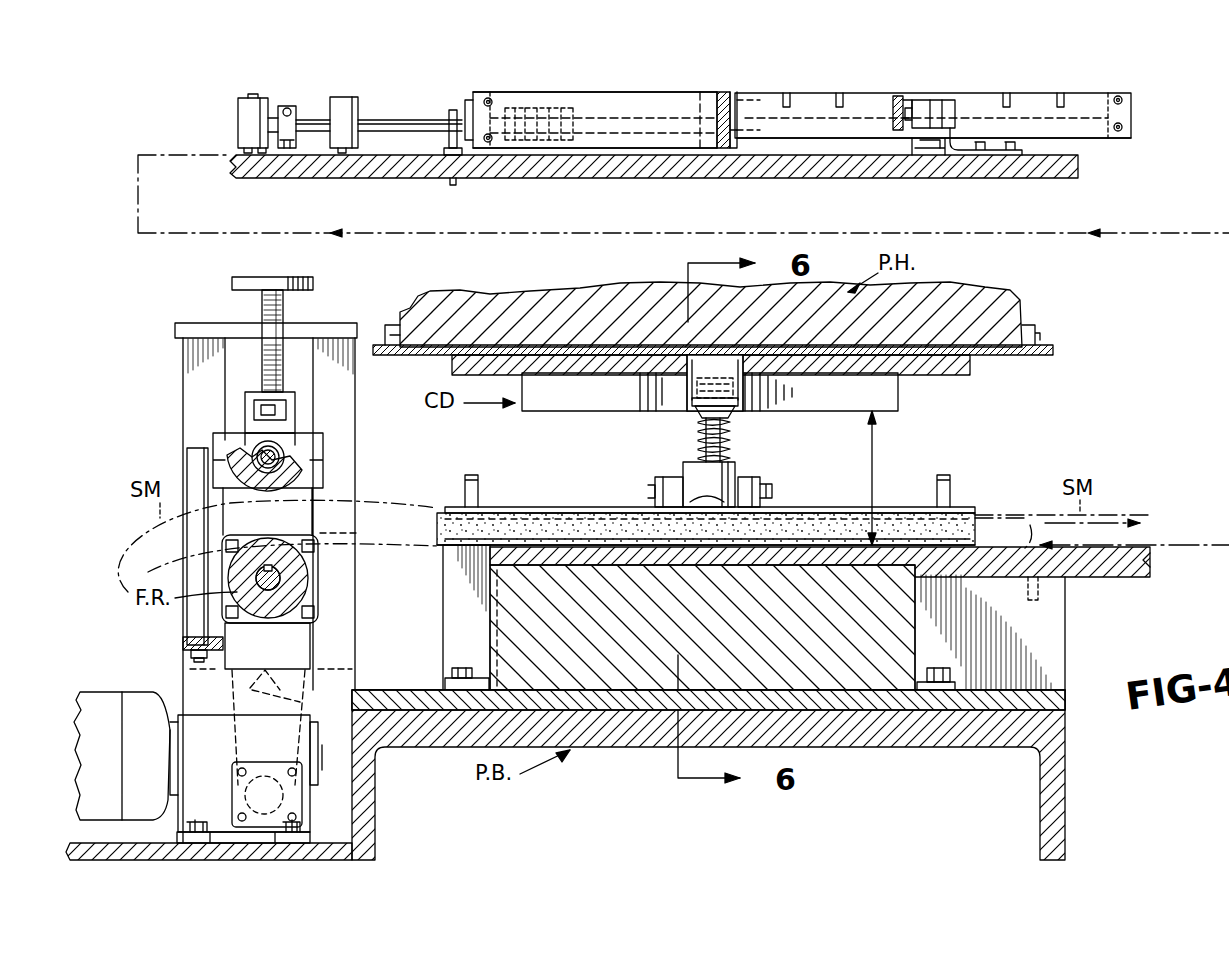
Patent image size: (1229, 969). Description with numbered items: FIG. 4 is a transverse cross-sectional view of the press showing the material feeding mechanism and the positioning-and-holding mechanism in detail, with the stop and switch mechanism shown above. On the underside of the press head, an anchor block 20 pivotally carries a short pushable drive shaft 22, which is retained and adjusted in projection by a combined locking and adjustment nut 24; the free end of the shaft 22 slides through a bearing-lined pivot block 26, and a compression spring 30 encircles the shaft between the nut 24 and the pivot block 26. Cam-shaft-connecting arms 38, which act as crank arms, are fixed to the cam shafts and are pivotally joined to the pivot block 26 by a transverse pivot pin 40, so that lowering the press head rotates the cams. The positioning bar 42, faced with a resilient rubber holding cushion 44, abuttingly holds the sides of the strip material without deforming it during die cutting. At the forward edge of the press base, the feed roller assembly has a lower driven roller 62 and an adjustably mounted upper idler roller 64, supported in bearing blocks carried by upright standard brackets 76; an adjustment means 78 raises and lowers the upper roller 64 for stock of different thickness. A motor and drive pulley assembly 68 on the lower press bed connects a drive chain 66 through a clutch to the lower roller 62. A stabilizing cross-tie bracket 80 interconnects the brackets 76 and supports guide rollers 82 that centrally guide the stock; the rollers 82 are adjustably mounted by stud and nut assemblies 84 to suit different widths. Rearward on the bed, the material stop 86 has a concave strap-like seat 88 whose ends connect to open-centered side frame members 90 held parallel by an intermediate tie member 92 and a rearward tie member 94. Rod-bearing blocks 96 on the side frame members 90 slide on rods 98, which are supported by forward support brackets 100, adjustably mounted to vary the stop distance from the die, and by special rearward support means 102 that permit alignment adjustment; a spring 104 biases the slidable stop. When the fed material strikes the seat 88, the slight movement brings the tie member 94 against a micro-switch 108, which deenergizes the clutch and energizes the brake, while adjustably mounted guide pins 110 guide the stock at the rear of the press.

The anchor block 20 is at (715, 358).
The drive shaft 22 is at (704, 440).
The locking and adjustment nut 24 is at (695, 404).
The pivot block 26 is at (735, 470).
The compression spring 30 is at (730, 432).
The cam-shaft-connecting arm 38 is at (660, 492).
The pivot pin 40 is at (764, 488).
The positioning bar 42 is at (548, 530).
The holding cushion 44 is at (706, 542).
The lower driven roller 62 is at (300, 567).
The upper idler roller 64 is at (238, 452).
The drive chain 66 is at (288, 700).
The motor and drive pulley assembly 68 is at (98, 696).
The upright standard bracket 76 is at (355, 645).
The adjustment means 78 is at (264, 298).
The cross-tie bracket 80 is at (230, 645).
The guide roller 82 is at (195, 470).
The stud and nut assembly 84 is at (190, 658).
The material stop 86 is at (662, 92).
The seat 88 is at (622, 92).
The side frame member 90 is at (805, 95).
The intermediate tie member 92 is at (745, 100).
The rearward tie member 94 is at (895, 100).
The rod-bearing block 96 is at (515, 88).
The rod 98 is at (402, 122).
The support bracket 100 is at (291, 104).
The support means 102 is at (915, 153).
The return spring 104 is at (540, 105).
The micro-switch 108 is at (916, 105).
The guide pin 110 is at (256, 95).